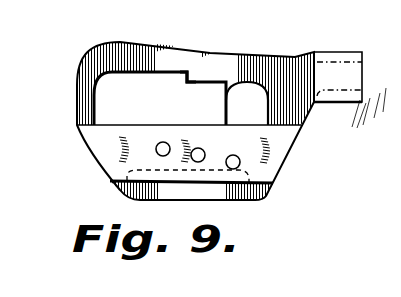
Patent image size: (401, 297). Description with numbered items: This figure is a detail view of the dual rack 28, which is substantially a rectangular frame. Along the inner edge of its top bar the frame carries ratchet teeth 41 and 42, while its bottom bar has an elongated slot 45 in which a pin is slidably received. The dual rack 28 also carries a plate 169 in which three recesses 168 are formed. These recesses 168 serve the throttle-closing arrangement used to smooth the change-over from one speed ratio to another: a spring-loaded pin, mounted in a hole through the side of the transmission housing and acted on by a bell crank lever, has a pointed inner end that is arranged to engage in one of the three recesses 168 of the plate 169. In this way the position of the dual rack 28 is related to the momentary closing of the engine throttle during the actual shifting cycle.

The dual rack 28 is at (280, 54).
The ratchet teeth 41 is at (195, 70).
The ratchet teeth 42 is at (237, 92).
The elongated slot 45 is at (168, 186).
The recesses 168 is at (239, 155).
The plate 169 is at (92, 158).